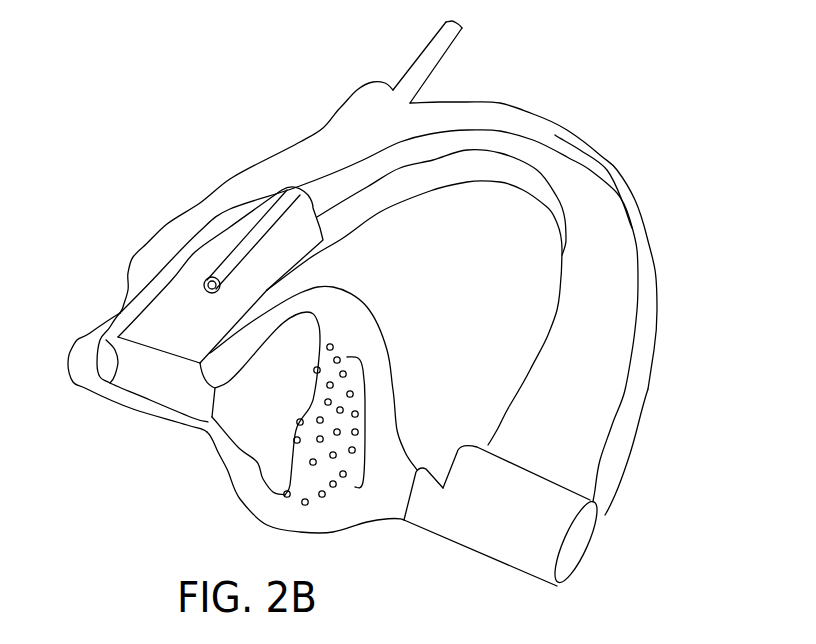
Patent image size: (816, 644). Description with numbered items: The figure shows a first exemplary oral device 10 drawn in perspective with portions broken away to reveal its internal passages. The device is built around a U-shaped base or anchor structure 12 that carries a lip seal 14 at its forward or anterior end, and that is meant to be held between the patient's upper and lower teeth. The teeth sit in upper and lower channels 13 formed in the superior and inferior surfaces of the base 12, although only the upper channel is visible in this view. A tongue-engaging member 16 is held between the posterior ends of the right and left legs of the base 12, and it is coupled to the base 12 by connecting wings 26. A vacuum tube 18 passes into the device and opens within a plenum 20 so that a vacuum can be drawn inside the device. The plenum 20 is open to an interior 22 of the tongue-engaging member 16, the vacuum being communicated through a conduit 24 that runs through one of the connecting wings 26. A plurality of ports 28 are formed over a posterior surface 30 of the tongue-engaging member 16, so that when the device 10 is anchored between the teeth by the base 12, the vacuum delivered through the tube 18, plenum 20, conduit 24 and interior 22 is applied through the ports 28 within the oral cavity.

The oral device 10 is at (673, 150).
The U-shaped base 12 is at (611, 434).
The upper and lower channels 13 is at (603, 332).
The lip seal 14 is at (535, 132).
The tongue-engaging member 16 is at (343, 502).
The vacuum tube 18 is at (451, 47).
The plenum 20 is at (298, 248).
The interior 22 is at (247, 422).
The conduit 24 is at (170, 390).
The connecting wings 26 is at (100, 385).
The ports 28 is at (393, 403).
The posterior surface 30 is at (370, 345).